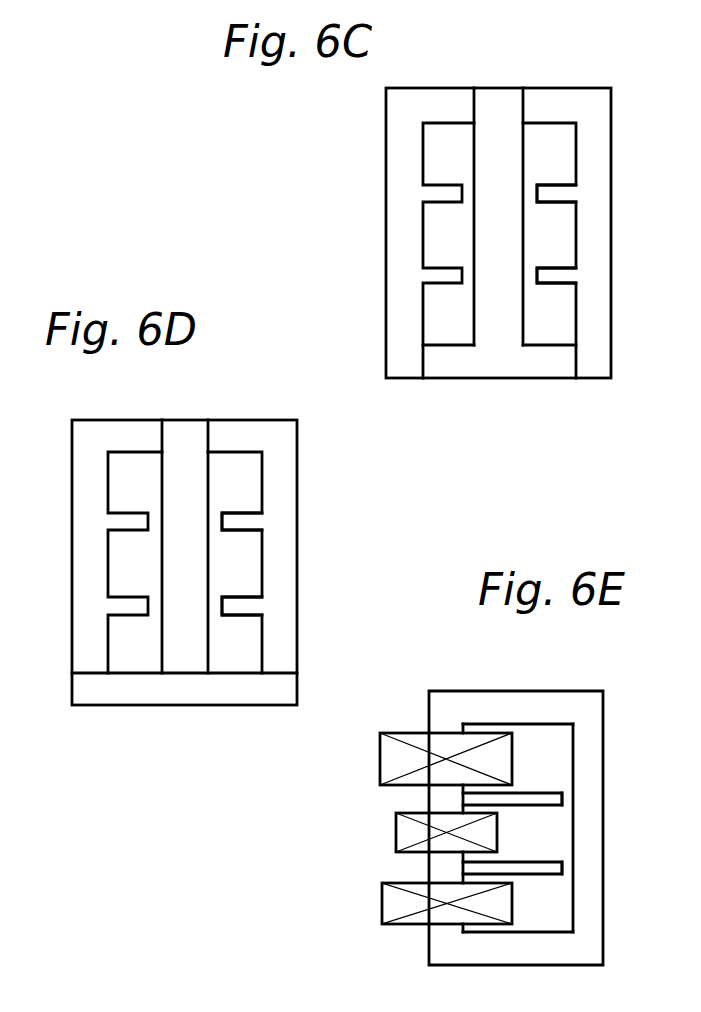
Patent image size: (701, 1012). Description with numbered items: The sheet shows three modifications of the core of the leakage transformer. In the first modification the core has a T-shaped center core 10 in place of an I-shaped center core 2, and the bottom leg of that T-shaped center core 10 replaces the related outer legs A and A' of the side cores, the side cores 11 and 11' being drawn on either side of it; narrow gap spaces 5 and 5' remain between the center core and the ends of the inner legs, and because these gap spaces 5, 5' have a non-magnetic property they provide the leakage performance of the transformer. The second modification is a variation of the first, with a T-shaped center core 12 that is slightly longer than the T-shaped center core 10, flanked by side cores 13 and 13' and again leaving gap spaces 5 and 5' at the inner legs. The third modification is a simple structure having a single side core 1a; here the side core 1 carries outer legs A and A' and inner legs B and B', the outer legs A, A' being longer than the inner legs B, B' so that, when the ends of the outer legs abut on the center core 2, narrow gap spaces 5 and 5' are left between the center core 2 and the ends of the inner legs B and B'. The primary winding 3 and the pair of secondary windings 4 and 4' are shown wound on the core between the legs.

In FIG. 6C, the T-shaped center core 10 is at (500, 96).
In FIG. 6C, the outer leg of magnetic core 11 is at (408, 241).
In FIG. 6C, the outer leg of magnetic core 11' is at (596, 249).
In FIG. 6C, the gap space 5 is at (587, 201).
In FIG. 6D, the gap space 5 is at (273, 492).
In FIG. 6E, the gap space 5 is at (598, 783).
In FIG. 6C, the gap space 5' is at (591, 287).
In FIG. 6D, the gap space 5' is at (278, 621).
In FIG. 6E, the gap space 5' is at (601, 849).
In FIG. 6D, the T-shaped center core 12 is at (196, 420).
In FIG. 6D, the outer leg of magnetic core 13 is at (92, 562).
In FIG. 6D, the outer leg of magnetic core 13' is at (280, 562).
In FIG. 6E, the side core 1 is at (553, 700).
In FIG. 6E, the single side core 1a is at (437, 705).
In FIG. 6E, the center core 2 is at (598, 713).
In FIG. 6E, the primary winding 3 is at (400, 833).
In FIG. 6E, the secondary winding 4 is at (427, 759).
In FIG. 6E, the secondary winding 4' is at (426, 903).
In FIG. 6E, the outer leg A is at (518, 683).
In FIG. 6E, the outer leg A' is at (518, 970).
In FIG. 6E, the inner leg B is at (512, 776).
In FIG. 6E, the inner leg B' is at (512, 848).